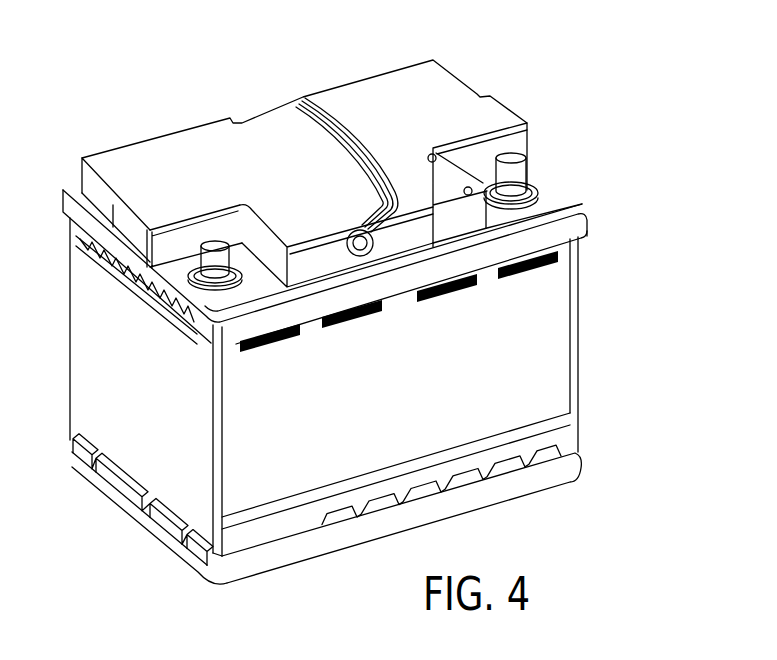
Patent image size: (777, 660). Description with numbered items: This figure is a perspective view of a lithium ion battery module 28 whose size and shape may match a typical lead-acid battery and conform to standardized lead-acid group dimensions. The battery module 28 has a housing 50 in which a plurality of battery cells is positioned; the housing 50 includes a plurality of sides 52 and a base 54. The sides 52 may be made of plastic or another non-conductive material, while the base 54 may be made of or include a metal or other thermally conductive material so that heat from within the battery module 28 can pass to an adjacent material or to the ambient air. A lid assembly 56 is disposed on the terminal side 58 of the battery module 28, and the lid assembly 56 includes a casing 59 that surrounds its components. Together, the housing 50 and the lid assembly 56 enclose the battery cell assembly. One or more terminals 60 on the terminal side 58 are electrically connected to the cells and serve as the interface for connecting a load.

The battery module 28 is at (353, 336).
The housing 50 is at (353, 373).
The sides 52 is at (588, 307).
The base 54 is at (295, 576).
The lid assembly 56 is at (332, 159).
The terminal side 58 is at (258, 101).
The casing 59 is at (132, 163).
The terminals 60 is at (222, 262).